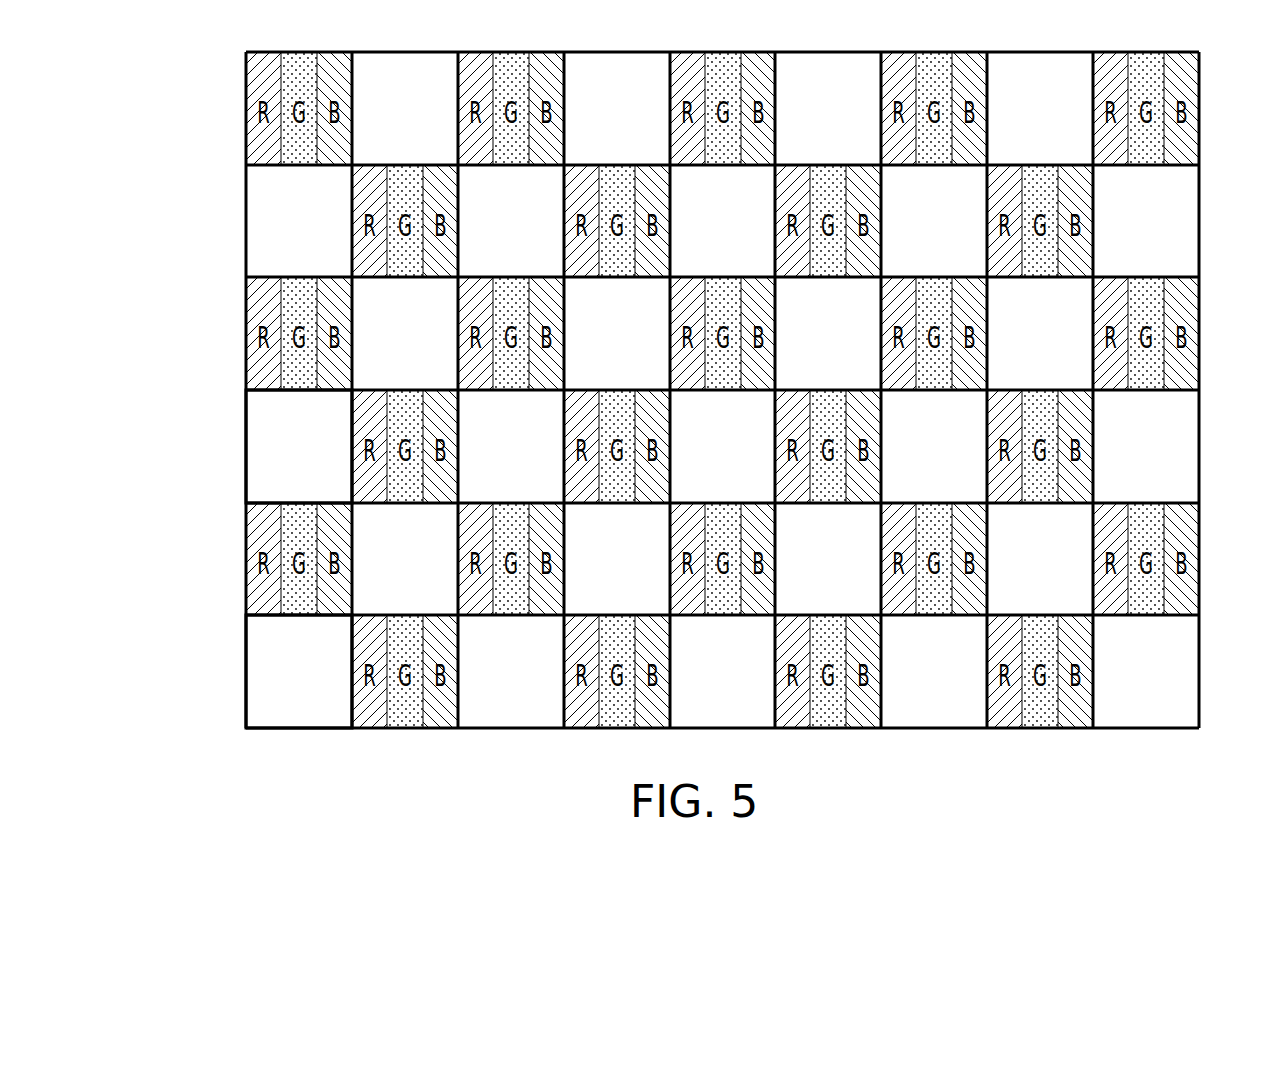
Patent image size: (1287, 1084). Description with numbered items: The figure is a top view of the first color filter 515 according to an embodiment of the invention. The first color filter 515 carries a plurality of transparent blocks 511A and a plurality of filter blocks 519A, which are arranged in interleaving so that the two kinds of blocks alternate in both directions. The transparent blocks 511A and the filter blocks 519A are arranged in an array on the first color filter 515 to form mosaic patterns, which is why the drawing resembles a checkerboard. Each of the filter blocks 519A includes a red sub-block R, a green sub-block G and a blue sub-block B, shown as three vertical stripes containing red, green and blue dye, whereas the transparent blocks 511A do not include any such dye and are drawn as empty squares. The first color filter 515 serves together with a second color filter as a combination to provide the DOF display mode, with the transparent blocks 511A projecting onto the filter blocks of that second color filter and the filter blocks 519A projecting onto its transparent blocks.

The filter blocks 519A is at (247, 338).
The transparent blocks 511A is at (247, 450).
The first color filter 515 is at (1280, 778).